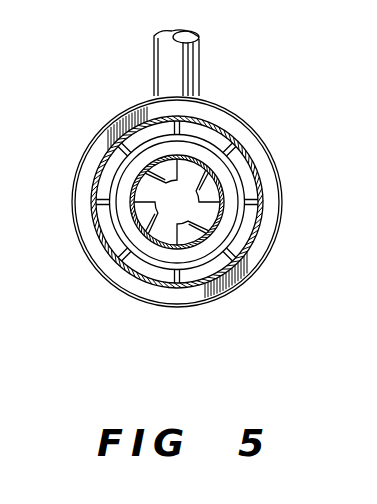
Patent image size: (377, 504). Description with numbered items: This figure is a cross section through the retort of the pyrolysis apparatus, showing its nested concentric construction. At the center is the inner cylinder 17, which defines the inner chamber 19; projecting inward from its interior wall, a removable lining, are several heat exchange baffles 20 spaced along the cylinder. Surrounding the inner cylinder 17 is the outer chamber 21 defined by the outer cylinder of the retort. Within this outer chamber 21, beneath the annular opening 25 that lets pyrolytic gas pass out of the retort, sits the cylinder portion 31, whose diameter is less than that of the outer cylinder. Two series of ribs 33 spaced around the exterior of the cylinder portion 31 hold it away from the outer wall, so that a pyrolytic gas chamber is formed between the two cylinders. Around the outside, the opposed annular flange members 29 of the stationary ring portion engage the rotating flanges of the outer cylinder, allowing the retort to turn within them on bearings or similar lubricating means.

The inner cylinder 17 is at (192, 203).
The inner chamber 19 is at (184, 200).
The heat exchange baffles 20 is at (148, 222).
The outer chamber 21 is at (121, 218).
The annular opening 25 is at (112, 238).
The annular flange members 29 is at (104, 127).
The cylinder portion 31 is at (237, 240).
The ribs 33 is at (257, 187).